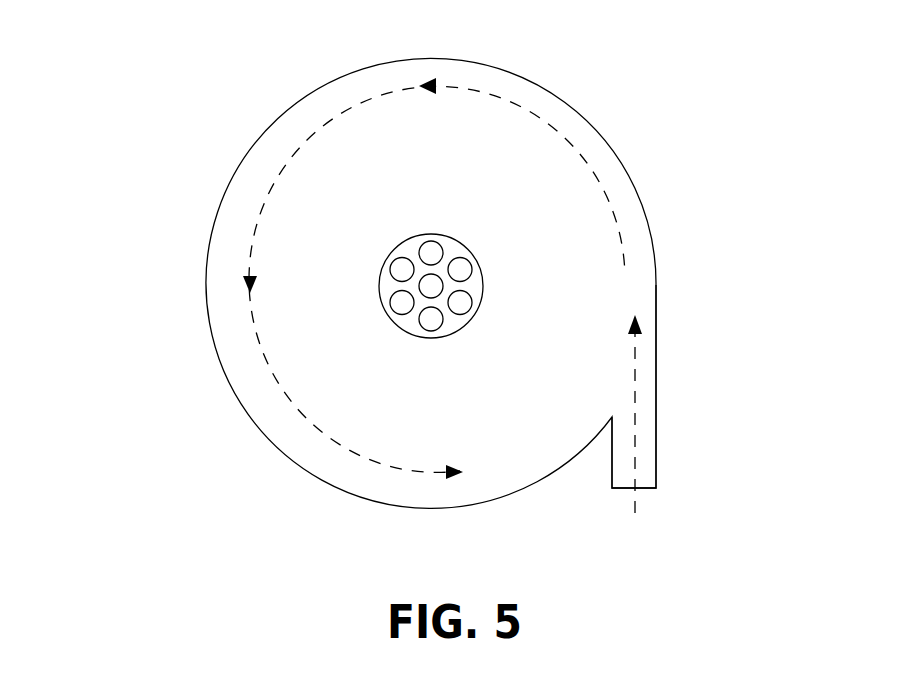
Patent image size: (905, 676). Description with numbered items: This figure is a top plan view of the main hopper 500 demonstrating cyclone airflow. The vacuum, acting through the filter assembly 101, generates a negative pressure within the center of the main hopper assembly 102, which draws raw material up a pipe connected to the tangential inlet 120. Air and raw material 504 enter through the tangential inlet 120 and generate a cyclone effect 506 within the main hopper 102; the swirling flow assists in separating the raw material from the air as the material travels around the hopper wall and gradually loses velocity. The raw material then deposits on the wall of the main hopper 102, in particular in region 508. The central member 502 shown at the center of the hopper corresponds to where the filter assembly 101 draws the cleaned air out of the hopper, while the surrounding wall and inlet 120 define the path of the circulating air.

The cyclone separator 500 is at (166, 447).
The main hopper assembly 102 is at (253, 147).
The tangential inlet 120 is at (656, 472).
The central outlet member 502 is at (383, 290).
The filter assembly 101 is at (431, 286).
The cyclone effect 506 is at (583, 152).
The air and raw material 504 is at (636, 377).
The region 508 is at (430, 420).